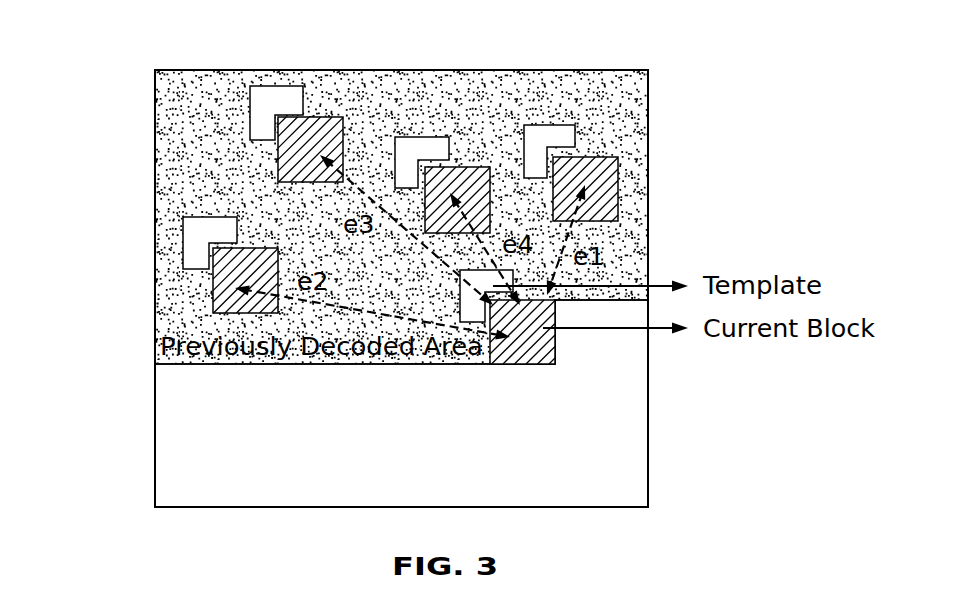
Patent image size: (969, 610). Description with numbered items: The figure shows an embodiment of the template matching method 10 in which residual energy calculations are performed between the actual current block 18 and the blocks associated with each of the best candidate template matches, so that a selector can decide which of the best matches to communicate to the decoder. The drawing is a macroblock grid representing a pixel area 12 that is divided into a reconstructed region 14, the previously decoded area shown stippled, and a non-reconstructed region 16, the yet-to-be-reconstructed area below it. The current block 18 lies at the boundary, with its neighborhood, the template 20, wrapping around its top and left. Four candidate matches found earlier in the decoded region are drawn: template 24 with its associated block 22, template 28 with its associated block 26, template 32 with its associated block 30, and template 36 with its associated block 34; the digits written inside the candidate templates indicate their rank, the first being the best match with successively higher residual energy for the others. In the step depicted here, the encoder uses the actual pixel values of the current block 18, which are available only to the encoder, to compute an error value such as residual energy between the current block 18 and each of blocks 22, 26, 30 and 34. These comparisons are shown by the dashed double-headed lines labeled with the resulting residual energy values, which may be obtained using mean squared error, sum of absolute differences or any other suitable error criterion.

The template matching method 10 is at (125, 58).
The pixel area 12 is at (155, 192).
The reconstructed region 14 is at (168, 298).
The non-reconstructed region 16 is at (177, 458).
The current block 18 is at (518, 364).
The template 20 is at (462, 295).
The block 22 is at (472, 175).
The template 24 is at (443, 138).
The block 26 is at (613, 187).
The template 28 is at (563, 130).
The block 30 is at (260, 256).
The template 32 is at (232, 220).
The block 34 is at (333, 127).
The template 36 is at (262, 127).